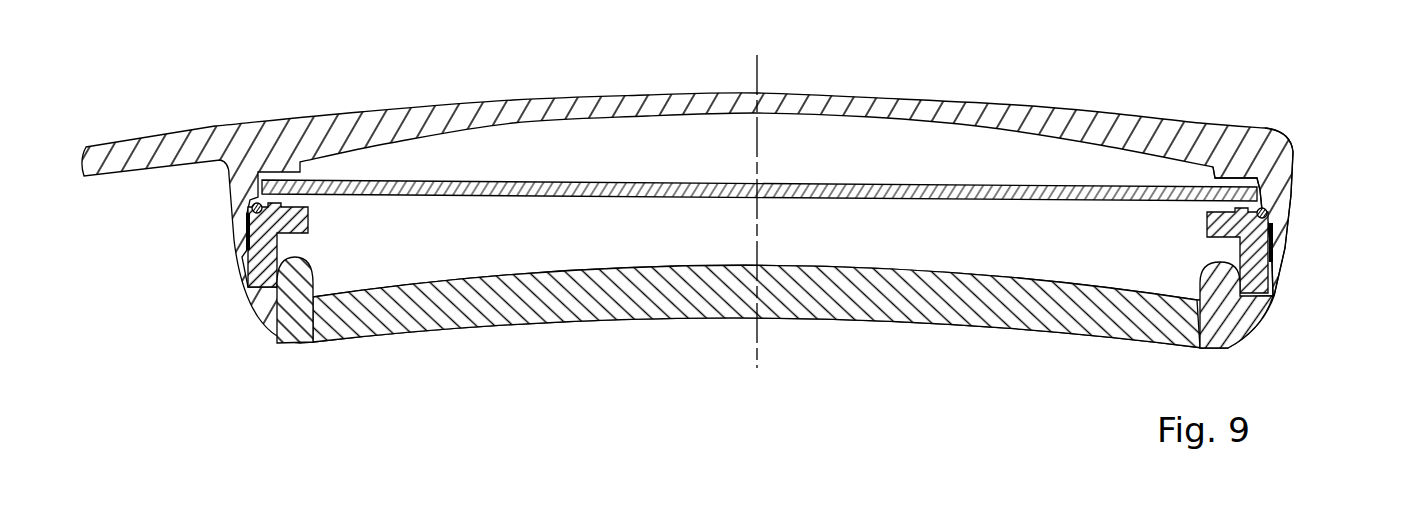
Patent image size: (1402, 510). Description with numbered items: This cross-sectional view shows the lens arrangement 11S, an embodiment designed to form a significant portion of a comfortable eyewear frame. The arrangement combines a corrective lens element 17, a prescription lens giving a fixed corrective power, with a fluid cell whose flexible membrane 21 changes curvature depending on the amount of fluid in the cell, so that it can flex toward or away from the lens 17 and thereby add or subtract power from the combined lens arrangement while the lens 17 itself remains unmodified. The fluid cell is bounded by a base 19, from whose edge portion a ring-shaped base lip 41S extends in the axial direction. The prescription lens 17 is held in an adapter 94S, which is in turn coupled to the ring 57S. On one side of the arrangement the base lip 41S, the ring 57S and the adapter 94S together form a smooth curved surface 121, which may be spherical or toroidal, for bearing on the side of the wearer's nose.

The lens arrangement 11S is at (836, 76).
The base 19 is at (895, 102).
The membrane 21 is at (947, 193).
The base lip 41S is at (1275, 180).
The ring 57S is at (1252, 250).
The smooth curved surface 121 is at (1272, 284).
The corrective lens element 17 is at (1003, 302).
The adapter 94S is at (1240, 323).